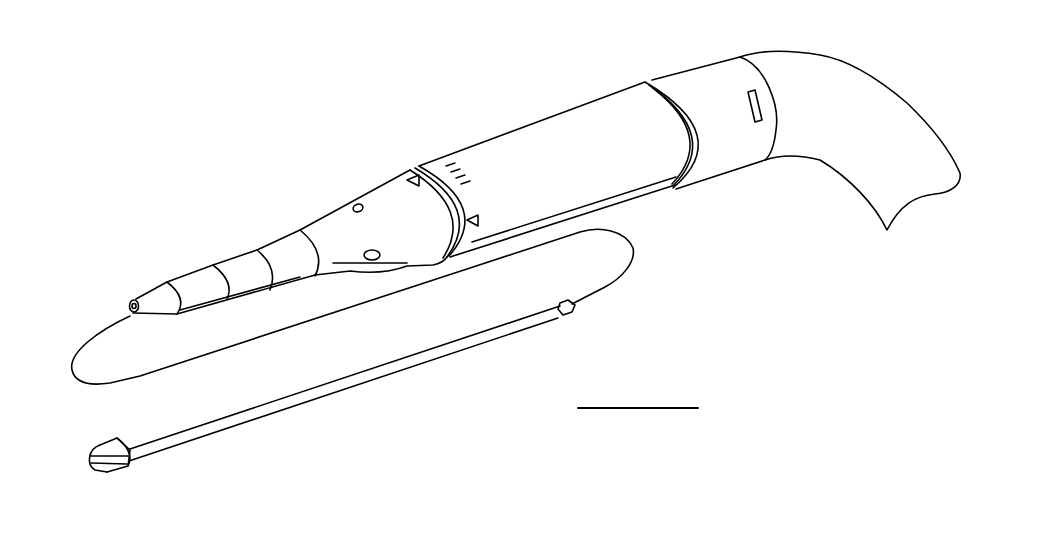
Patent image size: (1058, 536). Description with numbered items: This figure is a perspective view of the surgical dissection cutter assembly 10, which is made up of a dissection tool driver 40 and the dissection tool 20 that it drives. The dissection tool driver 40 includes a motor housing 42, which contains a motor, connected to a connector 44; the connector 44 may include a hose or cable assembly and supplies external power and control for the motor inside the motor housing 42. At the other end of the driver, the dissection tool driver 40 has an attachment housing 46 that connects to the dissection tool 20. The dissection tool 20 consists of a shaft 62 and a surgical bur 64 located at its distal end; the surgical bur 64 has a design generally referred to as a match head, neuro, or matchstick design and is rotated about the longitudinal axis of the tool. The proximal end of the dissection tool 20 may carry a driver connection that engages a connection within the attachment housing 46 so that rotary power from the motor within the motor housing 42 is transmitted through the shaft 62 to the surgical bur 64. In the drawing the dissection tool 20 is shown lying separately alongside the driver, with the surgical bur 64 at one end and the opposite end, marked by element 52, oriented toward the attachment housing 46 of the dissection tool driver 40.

The surgical dissection cutter assembly 10 is at (361, 104).
The dissection tool 20 is at (350, 388).
The dissection tool driver 40 is at (353, 199).
The motor housing 42 is at (519, 130).
The connector 44 is at (887, 84).
The attachment housing 46 is at (268, 245).
The connector tip 52 is at (562, 305).
The shaft 62 is at (377, 364).
The surgical bur 64 is at (99, 447).